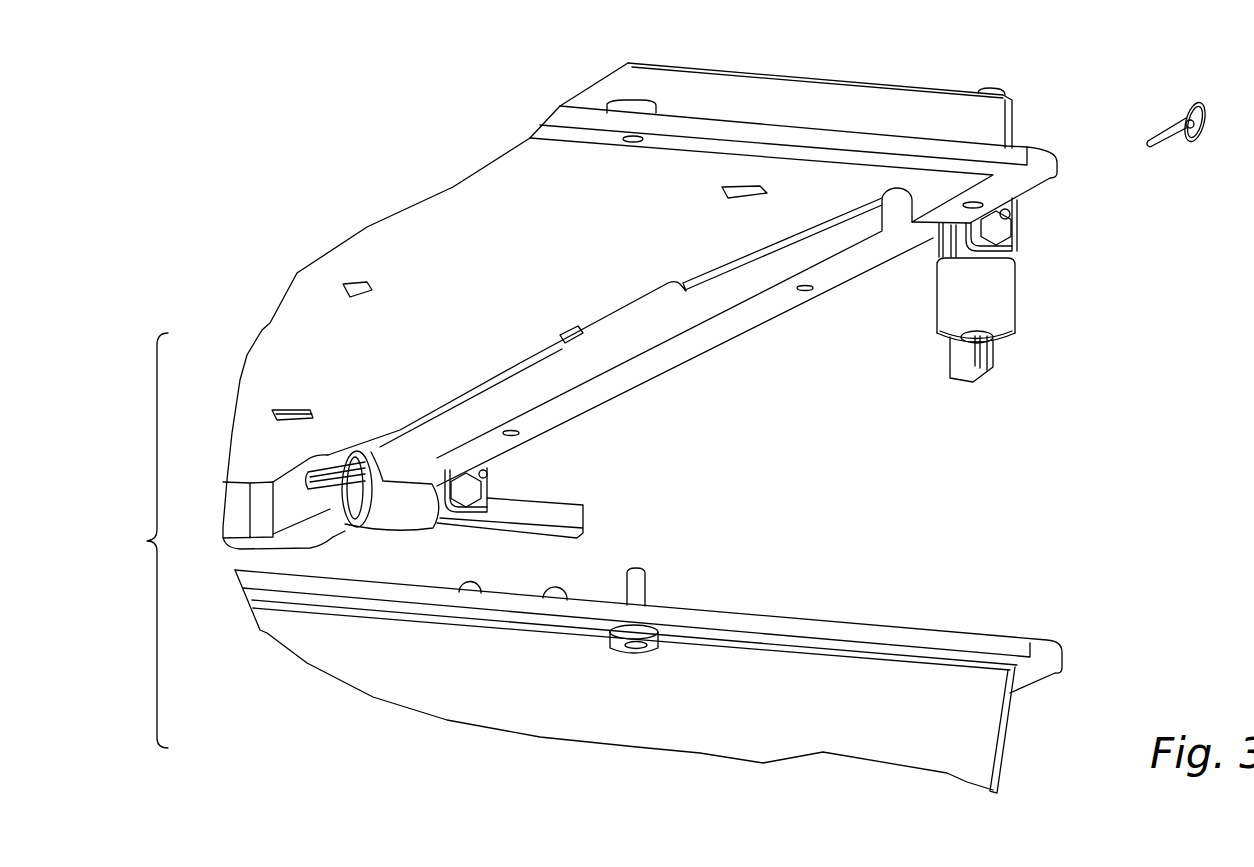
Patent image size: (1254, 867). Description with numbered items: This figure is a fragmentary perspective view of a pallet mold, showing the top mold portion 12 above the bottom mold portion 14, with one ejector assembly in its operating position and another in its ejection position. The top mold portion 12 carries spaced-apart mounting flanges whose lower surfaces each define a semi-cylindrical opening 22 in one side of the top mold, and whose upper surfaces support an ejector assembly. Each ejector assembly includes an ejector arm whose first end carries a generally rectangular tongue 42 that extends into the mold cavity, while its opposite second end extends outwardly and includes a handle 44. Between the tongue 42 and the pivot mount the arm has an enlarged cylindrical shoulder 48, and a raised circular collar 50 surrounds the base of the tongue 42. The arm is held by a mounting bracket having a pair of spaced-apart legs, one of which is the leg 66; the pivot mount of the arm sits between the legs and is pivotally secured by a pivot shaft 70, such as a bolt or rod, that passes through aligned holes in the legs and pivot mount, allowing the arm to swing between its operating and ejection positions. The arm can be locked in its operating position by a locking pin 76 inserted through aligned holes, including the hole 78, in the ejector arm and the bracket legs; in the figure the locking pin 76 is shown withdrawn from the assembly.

The top mold portion 12 is at (512, 190).
The bottom mold portion 14 is at (982, 725).
The semi-cylindrical opening 22 is at (913, 240).
The tongue 42 is at (960, 366).
The handle 44 is at (586, 513).
The cylindrical shoulder 48 is at (998, 298).
The collar 50 is at (989, 342).
The leg 66 is at (1008, 248).
The pivot shaft 70 is at (1000, 229).
The locking pin 76 is at (1172, 134).
The hole 78 is at (1012, 213).